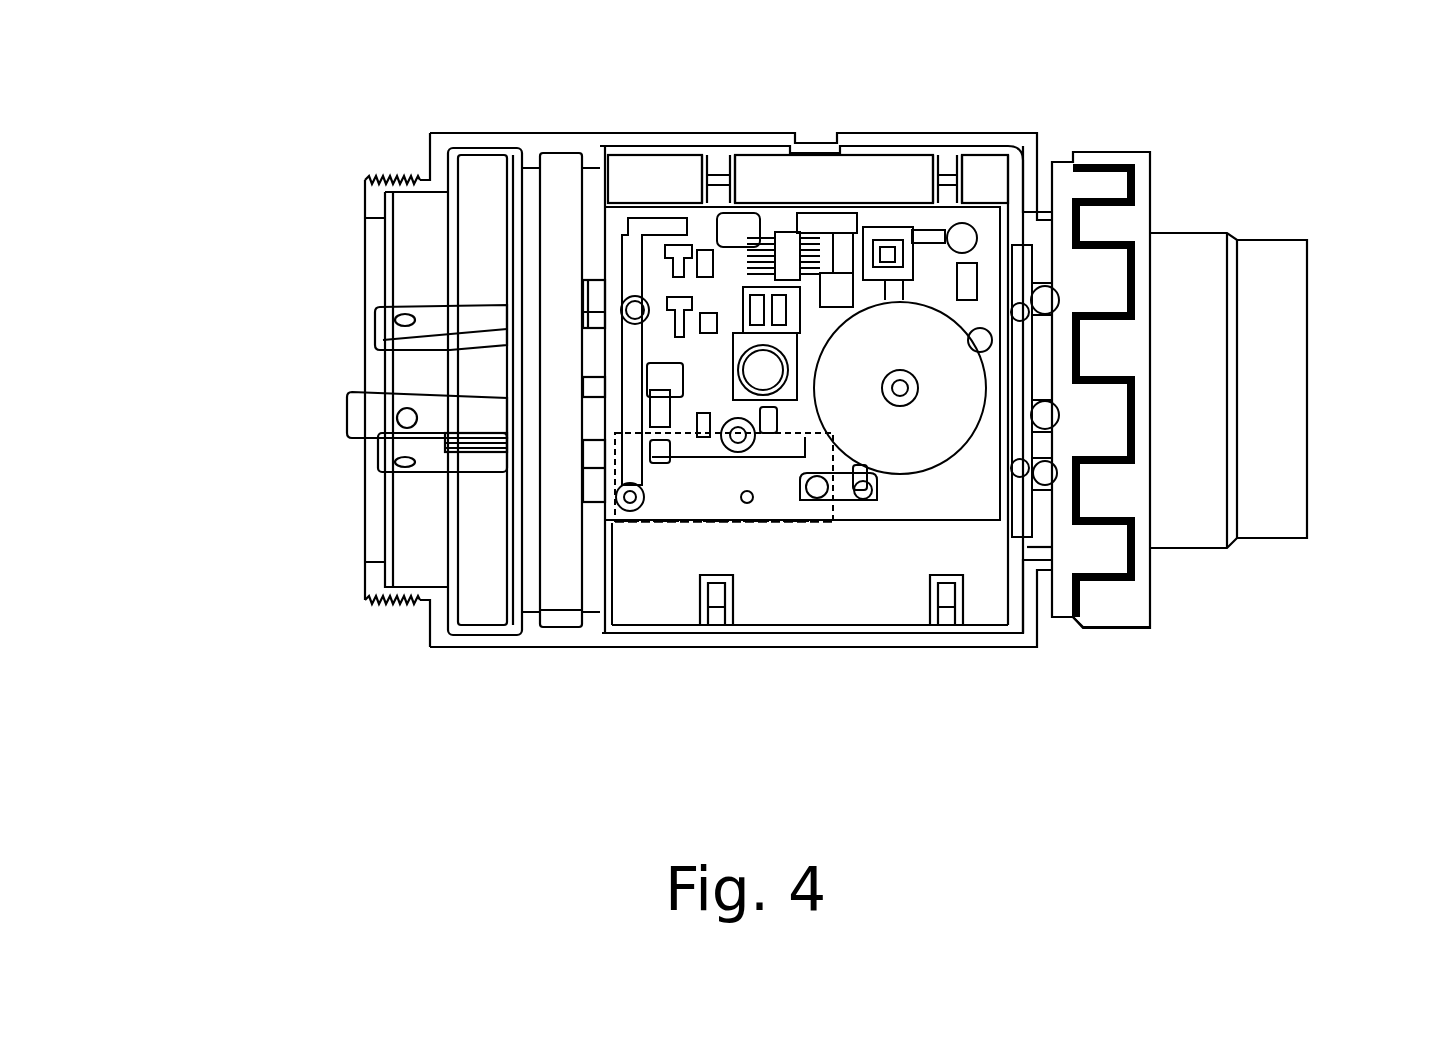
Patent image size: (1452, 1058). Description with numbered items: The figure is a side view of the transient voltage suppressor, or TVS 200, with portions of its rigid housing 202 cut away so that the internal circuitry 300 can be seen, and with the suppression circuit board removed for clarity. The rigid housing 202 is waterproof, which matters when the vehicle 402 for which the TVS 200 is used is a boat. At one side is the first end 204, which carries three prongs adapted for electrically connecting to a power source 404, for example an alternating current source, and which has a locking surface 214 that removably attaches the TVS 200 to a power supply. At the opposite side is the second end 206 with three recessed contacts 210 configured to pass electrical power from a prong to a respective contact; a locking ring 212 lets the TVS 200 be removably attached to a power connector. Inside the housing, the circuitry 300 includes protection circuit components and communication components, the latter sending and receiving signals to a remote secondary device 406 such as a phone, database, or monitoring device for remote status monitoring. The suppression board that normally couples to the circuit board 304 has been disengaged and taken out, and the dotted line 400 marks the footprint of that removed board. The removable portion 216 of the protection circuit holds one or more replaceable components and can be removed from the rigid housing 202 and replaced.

The TVS 200 is at (1292, 125).
The rigid housing 202 is at (915, 650).
The first end 204 is at (302, 696).
The opposing second end 206 is at (1270, 700).
The recessed contacts 210 is at (1334, 260).
The locking ring 212 is at (1098, 625).
The locking surface 214 is at (360, 607).
The removable portion 216 is at (636, 560).
The circuitry 300 is at (686, 183).
The circuit board 304 is at (873, 513).
The dotted line 400 is at (785, 521).
The vehicle 402 is at (1152, 302).
The power source 404 is at (310, 285).
The remote secondary device 406 is at (340, 517).